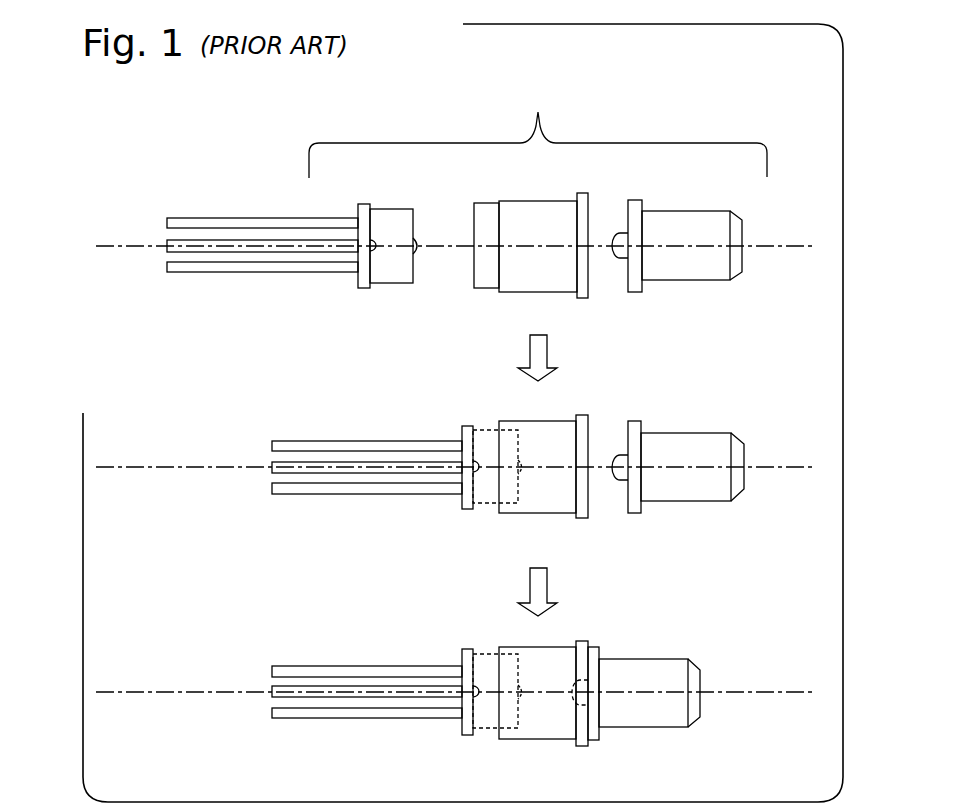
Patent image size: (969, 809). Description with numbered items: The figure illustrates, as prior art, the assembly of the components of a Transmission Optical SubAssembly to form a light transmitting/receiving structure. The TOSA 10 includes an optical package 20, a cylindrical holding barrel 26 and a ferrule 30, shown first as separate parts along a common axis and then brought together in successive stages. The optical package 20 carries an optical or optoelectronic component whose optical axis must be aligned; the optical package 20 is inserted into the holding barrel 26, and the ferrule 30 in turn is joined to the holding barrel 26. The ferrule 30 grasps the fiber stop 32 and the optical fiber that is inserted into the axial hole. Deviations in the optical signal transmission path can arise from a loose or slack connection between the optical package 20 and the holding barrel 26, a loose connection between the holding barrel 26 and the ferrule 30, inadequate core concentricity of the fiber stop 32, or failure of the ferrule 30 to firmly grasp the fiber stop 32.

The TOSA 10 is at (538, 130).
The optical package 20 is at (393, 190).
The cylindrical holding barrel 26 is at (535, 201).
The ferrule 30 is at (683, 211).
The fiber stop 32 is at (624, 258).